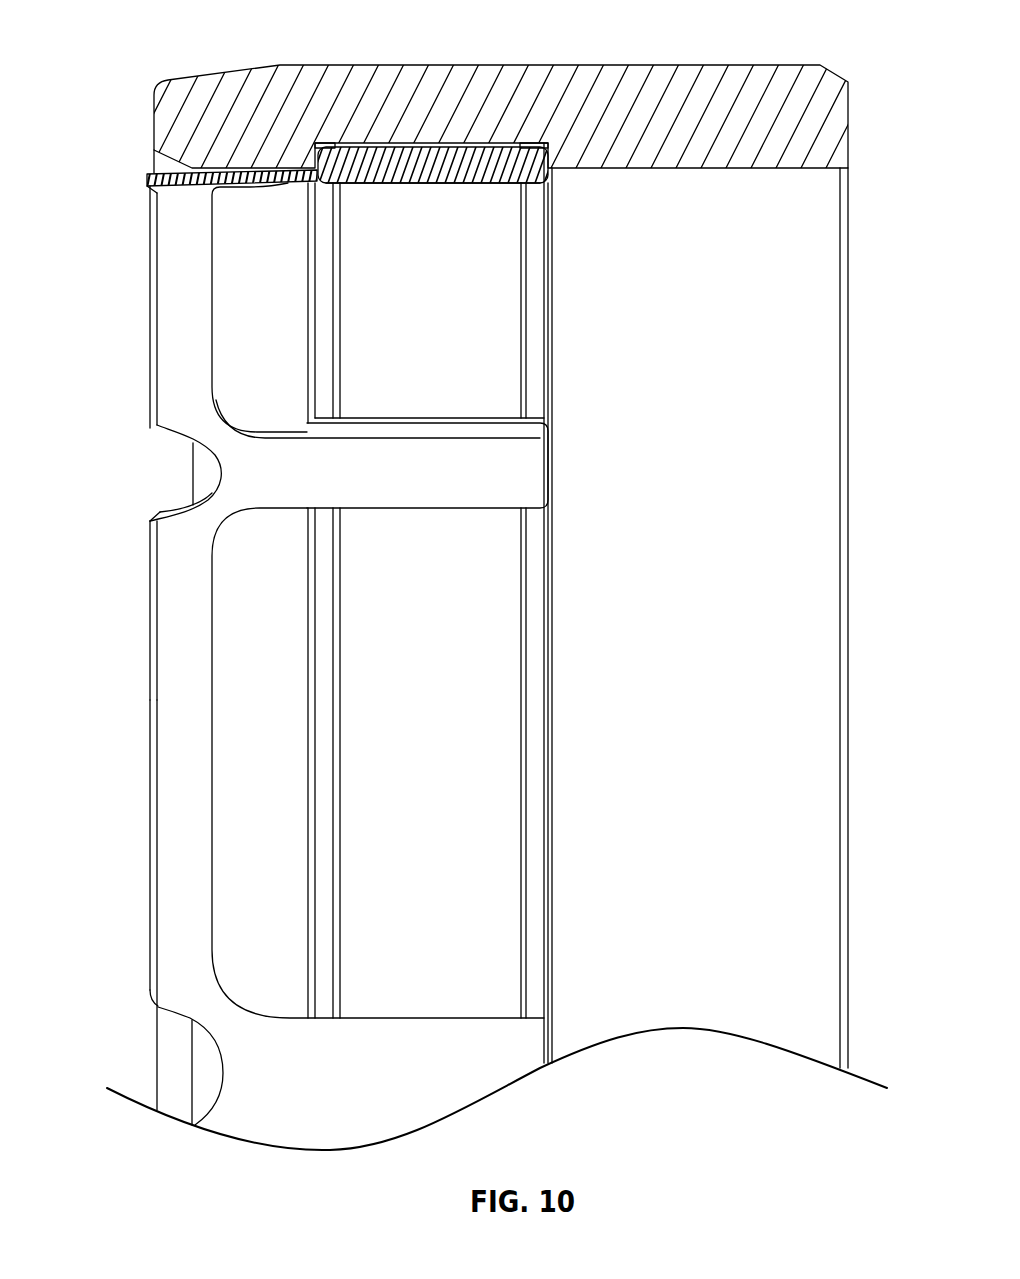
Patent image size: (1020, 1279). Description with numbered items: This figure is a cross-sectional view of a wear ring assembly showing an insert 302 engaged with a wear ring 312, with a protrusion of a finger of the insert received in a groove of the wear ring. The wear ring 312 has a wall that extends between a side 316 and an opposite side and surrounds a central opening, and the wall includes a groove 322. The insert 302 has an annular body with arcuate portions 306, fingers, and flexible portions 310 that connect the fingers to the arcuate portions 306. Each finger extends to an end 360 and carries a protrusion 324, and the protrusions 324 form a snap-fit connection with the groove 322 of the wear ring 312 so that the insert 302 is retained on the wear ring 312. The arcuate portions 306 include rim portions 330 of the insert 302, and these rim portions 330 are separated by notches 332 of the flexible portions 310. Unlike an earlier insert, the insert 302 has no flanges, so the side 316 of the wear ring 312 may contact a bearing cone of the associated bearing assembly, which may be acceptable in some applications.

The insert 302 is at (170, 683).
The arcuate portions 306 is at (165, 338).
The flexible portions 310 is at (172, 538).
The wear ring 312 is at (742, 85).
The side 316 is at (152, 100).
The groove 322 is at (463, 147).
The protrusions 324 is at (352, 165).
The rim portions 330 is at (150, 243).
The notches 332 is at (166, 488).
The end 360 is at (538, 164).